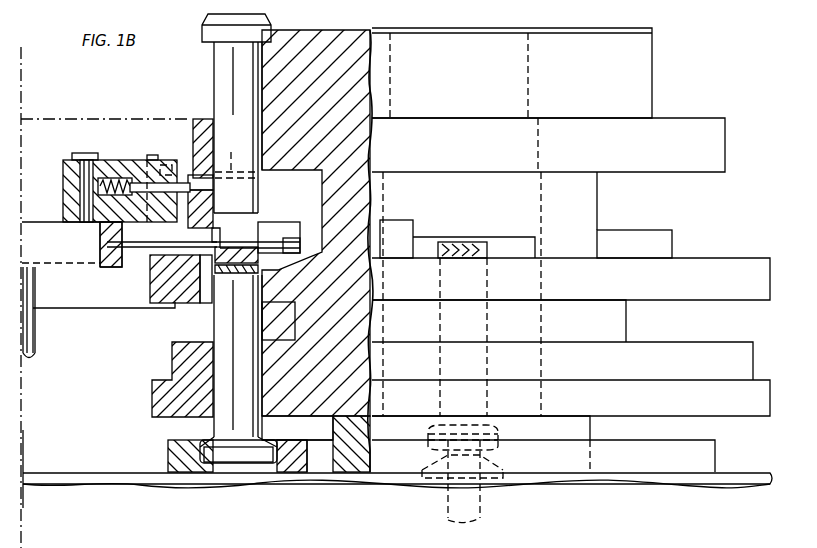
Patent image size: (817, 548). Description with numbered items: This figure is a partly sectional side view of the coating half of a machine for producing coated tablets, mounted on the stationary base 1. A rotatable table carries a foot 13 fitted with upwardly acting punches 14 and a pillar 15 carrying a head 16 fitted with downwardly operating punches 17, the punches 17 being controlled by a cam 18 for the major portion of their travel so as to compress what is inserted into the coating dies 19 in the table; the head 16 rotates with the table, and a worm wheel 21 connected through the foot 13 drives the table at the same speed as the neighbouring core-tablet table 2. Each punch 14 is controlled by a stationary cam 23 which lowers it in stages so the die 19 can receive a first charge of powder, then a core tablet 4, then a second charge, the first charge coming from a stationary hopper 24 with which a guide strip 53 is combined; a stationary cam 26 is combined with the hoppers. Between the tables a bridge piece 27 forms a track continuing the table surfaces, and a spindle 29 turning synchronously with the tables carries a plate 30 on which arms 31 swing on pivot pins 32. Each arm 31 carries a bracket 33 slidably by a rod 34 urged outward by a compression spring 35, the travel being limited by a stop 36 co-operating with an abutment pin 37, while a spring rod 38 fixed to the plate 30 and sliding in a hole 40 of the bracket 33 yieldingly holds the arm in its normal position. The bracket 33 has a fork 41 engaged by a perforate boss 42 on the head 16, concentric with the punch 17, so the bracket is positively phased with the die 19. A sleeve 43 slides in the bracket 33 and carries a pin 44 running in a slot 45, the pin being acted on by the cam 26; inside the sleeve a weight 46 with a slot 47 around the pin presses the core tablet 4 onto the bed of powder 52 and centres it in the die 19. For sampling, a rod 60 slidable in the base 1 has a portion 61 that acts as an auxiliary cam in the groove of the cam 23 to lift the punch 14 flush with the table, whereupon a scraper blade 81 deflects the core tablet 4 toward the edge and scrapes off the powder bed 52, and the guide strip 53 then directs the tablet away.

The base 1 is at (50, 478).
The table 2 is at (367, 30).
The core tablet 4 is at (260, 268).
The foot 13 is at (177, 367).
The punch 14 is at (485, 362).
The pillar 15 is at (598, 188).
The head 16 is at (673, 172).
The punch 17 is at (222, 68).
The cam 18 is at (647, 70).
The coating die 19 is at (210, 298).
The worm wheel 21 is at (762, 398).
The cam 23 is at (168, 462).
The hopper 24 is at (402, 222).
The cam 26 is at (297, 257).
The bridge piece 27 is at (88, 300).
The spindle 29 is at (38, 322).
The plate 30 is at (50, 246).
The arm 31 is at (67, 172).
The pivot pin 32 is at (82, 182).
The bracket 33 is at (193, 172).
The rod 34 is at (100, 149).
The compression spring 35 is at (100, 190).
The stop 36 is at (147, 177).
The abutment pin 37 is at (170, 167).
The spring rod 38 is at (107, 242).
The hole 40 is at (152, 267).
The fork 41 is at (236, 156).
The perforate boss 42 is at (262, 185).
The sleeve 43 is at (255, 242).
The pin 44 is at (286, 242).
The slot 45 is at (280, 230).
The weight 46 is at (210, 240).
The slot 47 is at (245, 247).
The bed of powder 52 is at (213, 270).
The guide strip 53 is at (439, 242).
The rod 60 is at (477, 505).
The portion 61 is at (503, 462).
The scraper blade 81 is at (637, 232).